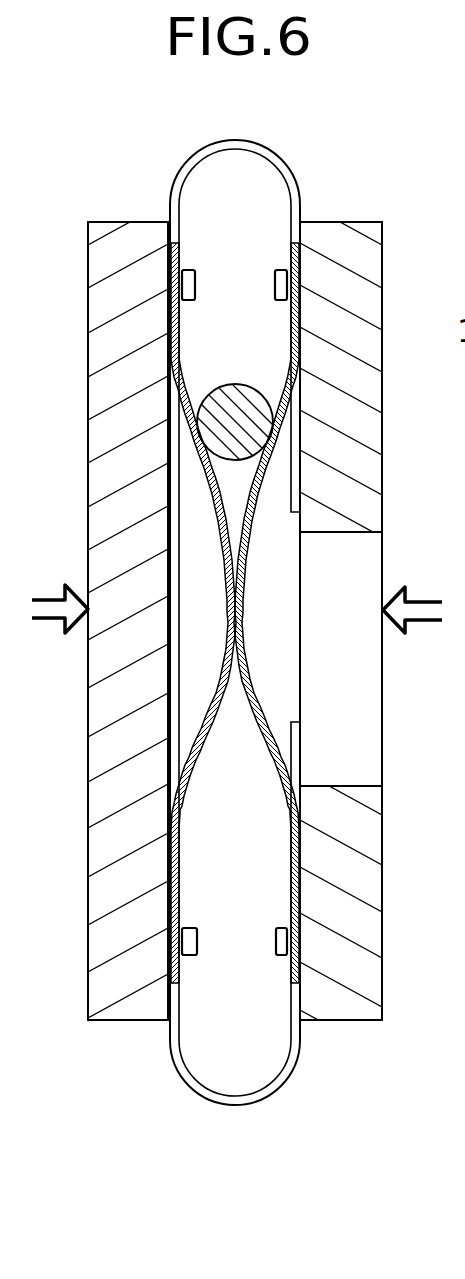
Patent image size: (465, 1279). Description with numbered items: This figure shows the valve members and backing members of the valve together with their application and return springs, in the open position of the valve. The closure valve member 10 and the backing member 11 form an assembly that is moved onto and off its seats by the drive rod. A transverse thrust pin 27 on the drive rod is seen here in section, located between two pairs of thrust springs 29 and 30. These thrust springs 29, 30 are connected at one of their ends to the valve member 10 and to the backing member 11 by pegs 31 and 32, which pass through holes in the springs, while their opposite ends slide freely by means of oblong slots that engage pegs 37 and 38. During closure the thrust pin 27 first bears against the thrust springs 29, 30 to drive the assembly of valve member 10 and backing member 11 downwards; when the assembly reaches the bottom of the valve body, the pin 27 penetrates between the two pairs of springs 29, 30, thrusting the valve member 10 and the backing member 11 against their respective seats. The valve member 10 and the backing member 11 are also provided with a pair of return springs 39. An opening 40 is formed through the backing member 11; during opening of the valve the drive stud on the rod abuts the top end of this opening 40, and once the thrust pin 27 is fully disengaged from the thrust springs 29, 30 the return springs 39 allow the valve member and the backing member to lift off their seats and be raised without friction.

The closure valve member 10 is at (133, 376).
The backing member 11 is at (342, 373).
The transverse thrust pin 27 is at (223, 388).
The thrust spring 29 is at (250, 519).
The thrust spring 30 is at (215, 507).
The peg 31 is at (273, 283).
The peg 32 is at (197, 285).
The peg 37 is at (277, 943).
The peg 38 is at (197, 940).
The return spring 39 is at (282, 170).
The opening 40 is at (348, 707).